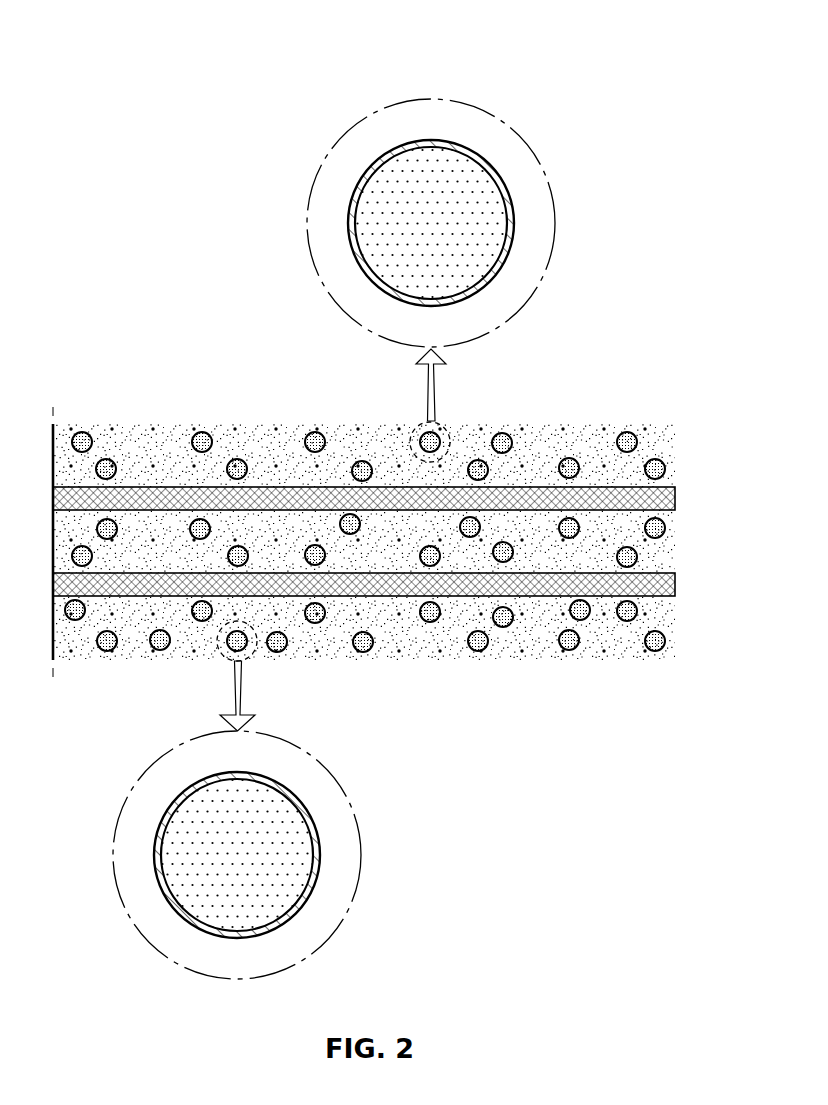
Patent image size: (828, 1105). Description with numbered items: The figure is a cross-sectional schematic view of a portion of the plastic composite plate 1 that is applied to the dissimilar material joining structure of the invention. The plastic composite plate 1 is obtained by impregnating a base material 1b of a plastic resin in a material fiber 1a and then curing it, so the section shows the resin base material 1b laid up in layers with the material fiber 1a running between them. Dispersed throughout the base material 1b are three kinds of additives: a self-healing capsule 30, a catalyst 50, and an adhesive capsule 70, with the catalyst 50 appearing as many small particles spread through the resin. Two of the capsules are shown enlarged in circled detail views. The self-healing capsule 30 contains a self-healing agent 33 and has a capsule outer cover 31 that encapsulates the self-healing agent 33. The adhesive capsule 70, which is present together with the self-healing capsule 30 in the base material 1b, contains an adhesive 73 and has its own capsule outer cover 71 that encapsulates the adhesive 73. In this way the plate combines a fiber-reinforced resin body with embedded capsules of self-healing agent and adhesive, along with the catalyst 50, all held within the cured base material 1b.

The plastic composite plate 1 is at (382, 50).
The material fiber 1a is at (676, 498).
The base material 1b is at (137, 440).
The self-healing capsule 30 is at (447, 427).
The capsule outer cover 31 is at (350, 203).
The self-healing agent 33 is at (448, 180).
The catalyst 50 is at (344, 438).
The adhesive capsule 70 is at (260, 653).
The capsule outer cover 71 is at (313, 823).
The adhesive 73 is at (265, 888).